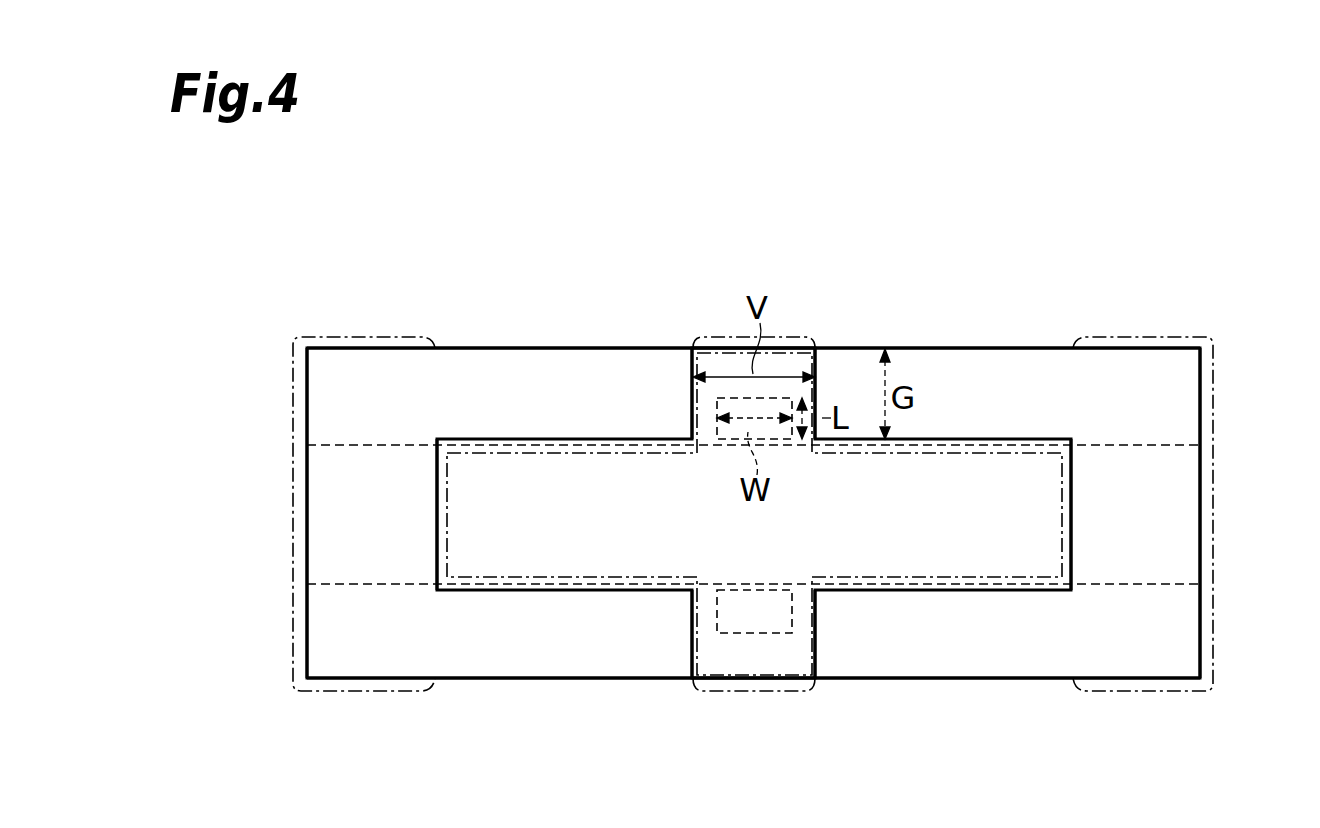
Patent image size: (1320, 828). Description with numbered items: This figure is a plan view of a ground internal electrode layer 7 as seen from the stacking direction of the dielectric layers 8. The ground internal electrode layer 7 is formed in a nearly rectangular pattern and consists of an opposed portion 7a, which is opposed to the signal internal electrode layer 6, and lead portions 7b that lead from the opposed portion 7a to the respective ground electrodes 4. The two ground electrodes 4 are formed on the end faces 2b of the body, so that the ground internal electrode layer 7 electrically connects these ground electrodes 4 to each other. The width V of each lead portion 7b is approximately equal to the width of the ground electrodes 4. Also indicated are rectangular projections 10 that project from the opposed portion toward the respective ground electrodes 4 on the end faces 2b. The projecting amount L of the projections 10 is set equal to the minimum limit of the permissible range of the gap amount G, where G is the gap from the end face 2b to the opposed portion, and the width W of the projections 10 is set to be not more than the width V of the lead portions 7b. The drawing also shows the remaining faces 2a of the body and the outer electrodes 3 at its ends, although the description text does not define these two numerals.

The end surface of ceramic body 2a is at (305, 388).
The end face 2b is at (868, 350).
The first outer electrode 3 is at (297, 480).
The ground electrode 4 is at (718, 338).
The signal internal electrode layer 6 is at (965, 480).
The ground internal electrode layer 7 is at (1030, 475).
The opposed portion 7a is at (497, 465).
The lead portion 7b is at (703, 388).
The dielectric layer 8 is at (530, 362).
The projection 10 is at (717, 418).